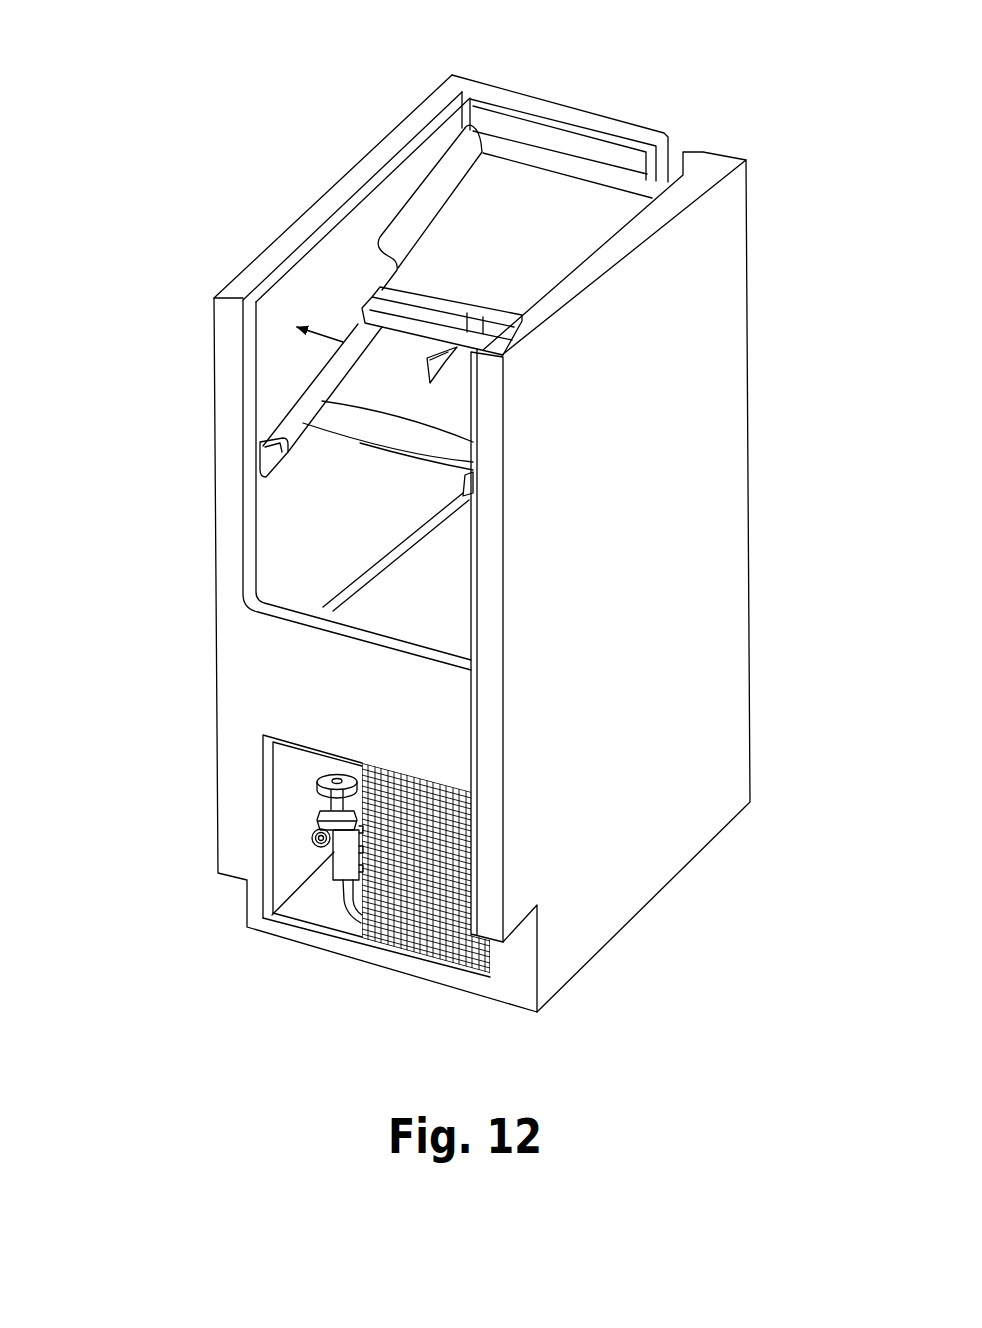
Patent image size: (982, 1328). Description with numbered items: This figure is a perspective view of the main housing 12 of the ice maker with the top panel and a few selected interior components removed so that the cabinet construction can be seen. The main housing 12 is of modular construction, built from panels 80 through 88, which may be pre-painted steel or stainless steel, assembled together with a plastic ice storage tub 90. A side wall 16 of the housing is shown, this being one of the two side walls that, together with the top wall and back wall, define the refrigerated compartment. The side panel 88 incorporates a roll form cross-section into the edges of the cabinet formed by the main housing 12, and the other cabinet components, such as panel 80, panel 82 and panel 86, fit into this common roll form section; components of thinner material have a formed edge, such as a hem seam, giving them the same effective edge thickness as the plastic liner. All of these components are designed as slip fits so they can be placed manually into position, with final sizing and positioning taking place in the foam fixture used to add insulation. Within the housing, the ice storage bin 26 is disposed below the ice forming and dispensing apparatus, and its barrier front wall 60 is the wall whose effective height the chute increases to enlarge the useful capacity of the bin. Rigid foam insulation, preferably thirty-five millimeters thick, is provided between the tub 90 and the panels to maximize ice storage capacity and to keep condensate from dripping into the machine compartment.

The main housing 12 is at (456, 514).
The panel 86 is at (644, 128).
The plastic ice storage tub 90 is at (256, 353).
The panel 82 is at (232, 460).
The side wall 16 is at (213, 512).
The ice storage bin 26 is at (351, 592).
The barrier front wall 60 is at (325, 688).
The panel 80 is at (282, 786).
The side panel 88 is at (704, 608).